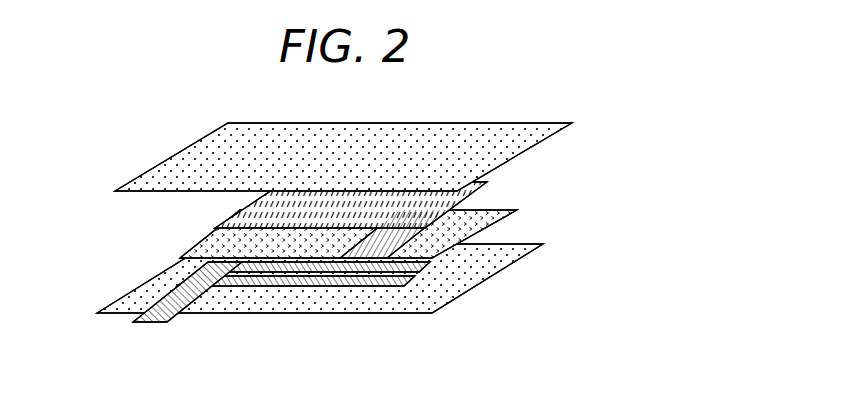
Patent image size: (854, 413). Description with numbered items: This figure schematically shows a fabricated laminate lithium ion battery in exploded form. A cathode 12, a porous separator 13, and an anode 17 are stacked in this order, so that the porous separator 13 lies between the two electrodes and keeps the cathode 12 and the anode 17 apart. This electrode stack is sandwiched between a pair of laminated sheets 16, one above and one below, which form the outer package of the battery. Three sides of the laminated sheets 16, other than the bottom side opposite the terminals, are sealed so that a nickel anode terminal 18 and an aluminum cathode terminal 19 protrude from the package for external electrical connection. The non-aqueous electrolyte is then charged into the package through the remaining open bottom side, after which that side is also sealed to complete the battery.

The cathode 12 is at (187, 271).
The porous separator 13 is at (483, 218).
The laminated sheet 16 is at (508, 147).
The anode 17 is at (257, 221).
The nickel anode terminal 18 is at (397, 258).
The aluminum cathode terminal 19 is at (143, 323).